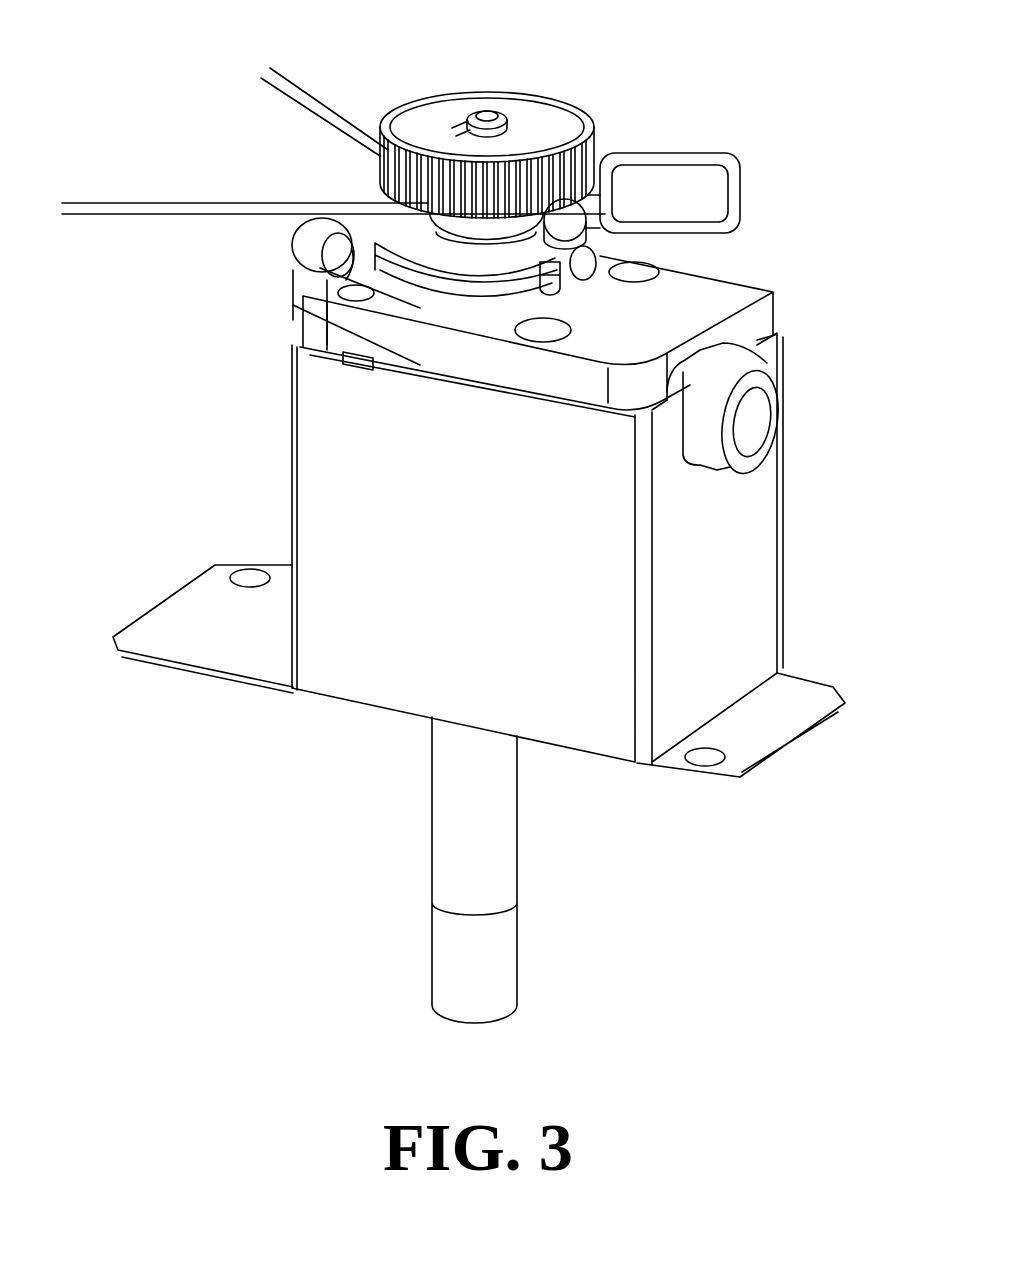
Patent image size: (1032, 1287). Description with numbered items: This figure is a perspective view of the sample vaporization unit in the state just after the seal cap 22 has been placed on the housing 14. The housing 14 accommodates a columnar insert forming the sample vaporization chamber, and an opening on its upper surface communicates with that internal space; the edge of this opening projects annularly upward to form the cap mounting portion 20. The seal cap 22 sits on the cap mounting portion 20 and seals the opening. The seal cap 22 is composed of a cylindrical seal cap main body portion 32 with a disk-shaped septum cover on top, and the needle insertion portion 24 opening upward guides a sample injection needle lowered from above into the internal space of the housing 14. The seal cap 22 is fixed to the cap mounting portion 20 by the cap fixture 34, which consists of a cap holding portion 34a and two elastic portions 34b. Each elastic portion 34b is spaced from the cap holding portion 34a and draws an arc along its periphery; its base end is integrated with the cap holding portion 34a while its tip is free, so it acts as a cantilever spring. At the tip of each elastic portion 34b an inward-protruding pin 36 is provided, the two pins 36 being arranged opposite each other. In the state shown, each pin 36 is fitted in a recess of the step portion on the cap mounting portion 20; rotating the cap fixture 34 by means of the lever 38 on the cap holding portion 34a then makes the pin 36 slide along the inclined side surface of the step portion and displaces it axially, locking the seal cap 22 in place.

The housing 14 is at (755, 565).
The cap mounting portion 20 is at (492, 298).
The seal cap 22 is at (681, 114).
The needle insertion portion 24 is at (488, 110).
The seal cap main body portion 32 is at (512, 226).
The cap fixture 34 is at (327, 284).
The cap holding portion 34a is at (397, 233).
The elastic portion 34b is at (395, 268).
The pin 36 is at (556, 289).
The lever 38 is at (718, 200).